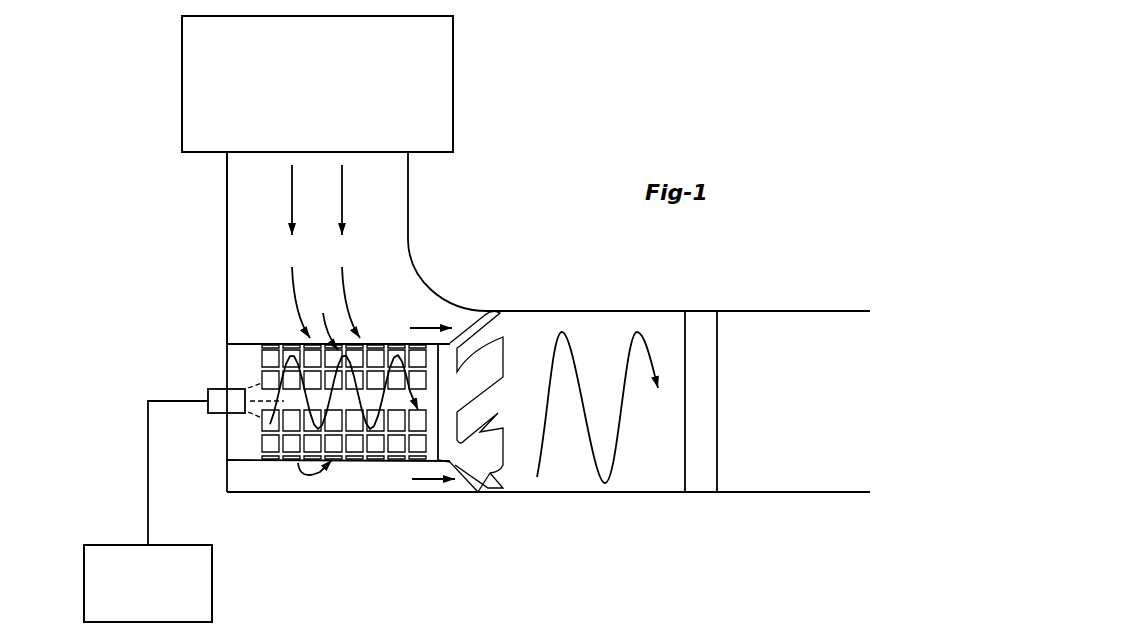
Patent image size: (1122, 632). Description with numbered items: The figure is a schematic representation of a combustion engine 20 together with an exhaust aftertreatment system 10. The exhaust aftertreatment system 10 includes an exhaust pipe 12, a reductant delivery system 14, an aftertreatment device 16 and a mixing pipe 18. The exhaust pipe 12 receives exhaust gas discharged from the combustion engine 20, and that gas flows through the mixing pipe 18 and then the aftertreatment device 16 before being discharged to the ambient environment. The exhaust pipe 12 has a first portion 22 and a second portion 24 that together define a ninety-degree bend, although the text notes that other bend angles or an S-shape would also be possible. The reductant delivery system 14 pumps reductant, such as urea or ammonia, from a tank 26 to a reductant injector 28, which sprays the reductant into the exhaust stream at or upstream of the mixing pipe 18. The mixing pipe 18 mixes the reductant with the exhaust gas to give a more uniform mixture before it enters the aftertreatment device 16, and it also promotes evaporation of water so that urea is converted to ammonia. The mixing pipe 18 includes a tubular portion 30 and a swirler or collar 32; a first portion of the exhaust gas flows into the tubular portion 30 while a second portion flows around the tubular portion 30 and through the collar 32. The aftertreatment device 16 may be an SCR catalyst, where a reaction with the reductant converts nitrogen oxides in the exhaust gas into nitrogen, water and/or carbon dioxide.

The exhaust aftertreatment system 10 is at (499, 270).
The exhaust pipe 12 is at (418, 262).
The reductant delivery system 14 is at (154, 392).
The aftertreatment device 16 is at (711, 334).
The mixing pipe 18 is at (508, 336).
The combustion engine 20 is at (453, 83).
The first portion 22 is at (408, 177).
The second portion 24 is at (524, 311).
The tank 26 is at (212, 583).
The reductant injector 28 is at (218, 389).
The tubular portion 30 is at (367, 463).
The collar 32 is at (472, 489).